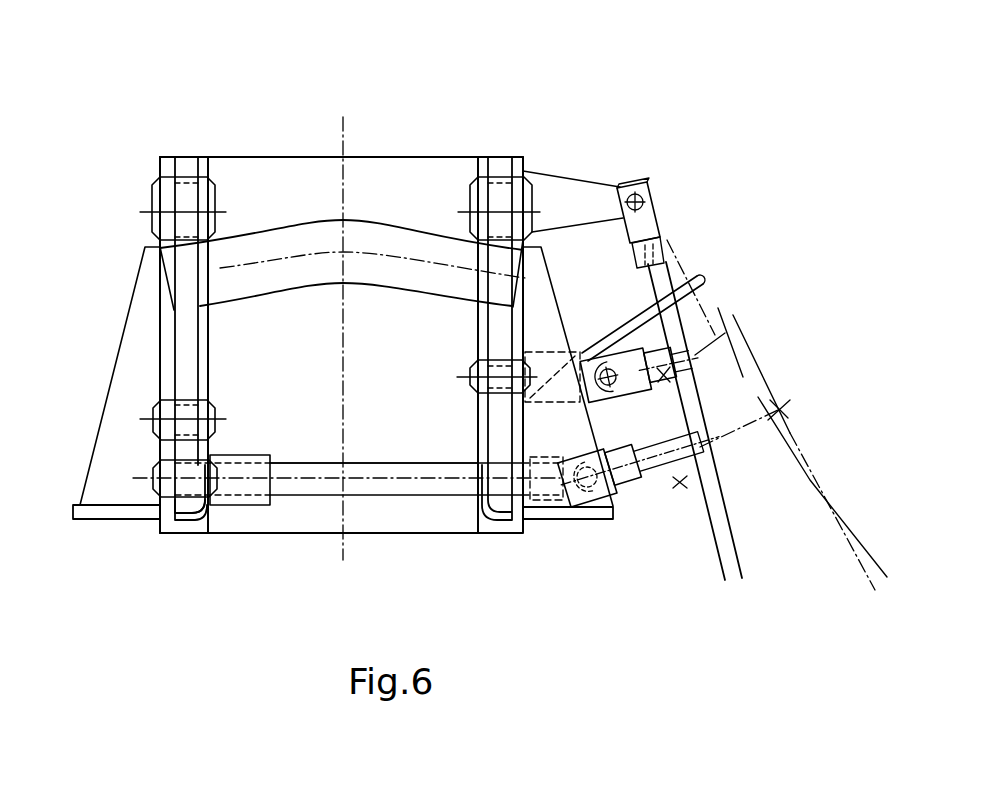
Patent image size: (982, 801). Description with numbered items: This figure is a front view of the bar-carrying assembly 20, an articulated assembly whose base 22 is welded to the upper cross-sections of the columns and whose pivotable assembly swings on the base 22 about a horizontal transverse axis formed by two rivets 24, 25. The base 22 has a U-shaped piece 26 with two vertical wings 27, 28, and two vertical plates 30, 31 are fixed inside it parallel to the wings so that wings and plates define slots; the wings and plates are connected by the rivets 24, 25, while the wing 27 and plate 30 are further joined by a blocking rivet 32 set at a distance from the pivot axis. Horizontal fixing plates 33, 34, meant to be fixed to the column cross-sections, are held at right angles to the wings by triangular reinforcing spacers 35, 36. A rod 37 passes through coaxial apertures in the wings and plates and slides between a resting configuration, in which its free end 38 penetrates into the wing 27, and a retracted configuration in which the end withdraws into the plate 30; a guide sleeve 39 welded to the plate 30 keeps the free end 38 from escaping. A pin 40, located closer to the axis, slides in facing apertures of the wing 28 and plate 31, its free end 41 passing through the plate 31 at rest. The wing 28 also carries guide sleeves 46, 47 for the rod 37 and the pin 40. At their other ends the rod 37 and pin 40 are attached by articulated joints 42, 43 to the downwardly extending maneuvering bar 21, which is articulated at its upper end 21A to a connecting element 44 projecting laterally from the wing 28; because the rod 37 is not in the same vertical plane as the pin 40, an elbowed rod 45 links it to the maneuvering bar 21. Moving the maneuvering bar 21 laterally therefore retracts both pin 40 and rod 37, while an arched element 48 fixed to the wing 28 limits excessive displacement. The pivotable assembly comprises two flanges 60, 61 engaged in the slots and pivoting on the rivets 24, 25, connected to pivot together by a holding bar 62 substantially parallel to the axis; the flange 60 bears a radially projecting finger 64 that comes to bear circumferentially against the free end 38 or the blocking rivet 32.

The bar-carrying assembly 20 is at (454, 309).
The maneuvering bar 21 is at (737, 540).
The upper end of the maneuvering bar 21A is at (650, 202).
The base 22 is at (425, 540).
The rivet 24 is at (150, 194).
The rivet 25 is at (457, 200).
The U-shaped piece 26 is at (272, 148).
The vertical wing 27 is at (160, 380).
The vertical wing 28 is at (545, 437).
The vertical plate 30 is at (208, 326).
The vertical plate 31 is at (478, 362).
The blocking rivet 32 is at (147, 428).
The horizontal fixing plate 33 is at (113, 520).
The horizontal fixing plate 34 is at (585, 520).
The triangular reinforcing spacer 35 is at (128, 314).
The triangular reinforcing spacer 36 is at (552, 290).
The rod 37 is at (380, 462).
The free end of the rod 38 is at (160, 466).
The guide sleeve 39 is at (247, 456).
The pin 40 is at (477, 407).
The free end of the pin 41 is at (472, 350).
The articulated joint 42 is at (630, 398).
The articulated joint 43 is at (628, 497).
The connecting element 44 is at (588, 172).
The elbowed rod 45 is at (700, 422).
The guide sleeve 46 is at (548, 500).
The guide sleeve 47 is at (553, 340).
The arched element 48 is at (713, 298).
The flange 60 is at (187, 157).
The flange 61 is at (502, 157).
The holding bar 62 is at (372, 220).
The radially projecting finger 64 is at (183, 492).